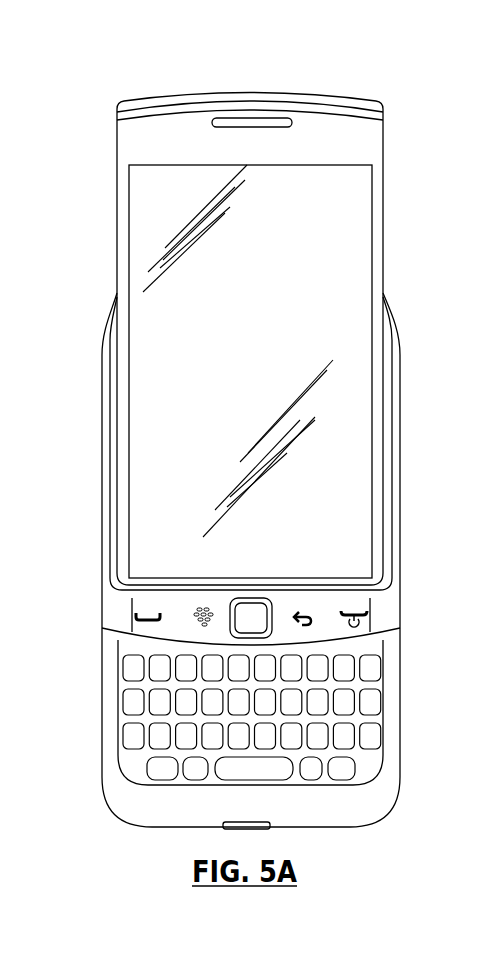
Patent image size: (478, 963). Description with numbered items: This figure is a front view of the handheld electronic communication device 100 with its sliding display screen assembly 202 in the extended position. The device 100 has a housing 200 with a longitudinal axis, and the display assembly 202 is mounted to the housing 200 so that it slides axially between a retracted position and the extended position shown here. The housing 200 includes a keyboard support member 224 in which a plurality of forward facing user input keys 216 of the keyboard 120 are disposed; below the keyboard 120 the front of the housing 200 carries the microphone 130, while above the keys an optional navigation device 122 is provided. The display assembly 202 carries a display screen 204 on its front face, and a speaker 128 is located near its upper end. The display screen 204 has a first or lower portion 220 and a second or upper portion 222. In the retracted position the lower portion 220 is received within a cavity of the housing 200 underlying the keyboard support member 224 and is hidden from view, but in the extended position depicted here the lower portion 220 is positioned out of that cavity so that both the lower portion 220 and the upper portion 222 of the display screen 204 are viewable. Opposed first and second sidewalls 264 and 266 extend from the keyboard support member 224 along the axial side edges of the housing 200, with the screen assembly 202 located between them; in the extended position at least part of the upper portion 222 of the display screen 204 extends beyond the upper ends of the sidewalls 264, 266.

The handheld electronic communication device 100 is at (356, 65).
The speaker 128 is at (256, 119).
The sliding display screen assembly 202 is at (383, 220).
The upper portion of display screen 222 is at (100, 165).
The display screen 204 is at (318, 316).
The second sidewall 266 is at (400, 393).
The lower portion of display screen 220 is at (100, 382).
The first sidewall 264 is at (106, 541).
The navigation device 122 is at (255, 610).
The housing 200 is at (397, 603).
The keyboard 120 is at (350, 698).
The keyboard support member 224 is at (360, 762).
The user input keys 216 is at (207, 740).
The microphone 130 is at (248, 829).